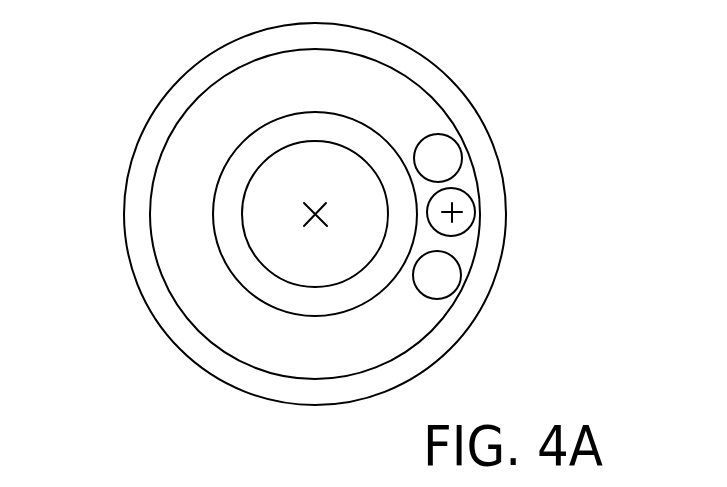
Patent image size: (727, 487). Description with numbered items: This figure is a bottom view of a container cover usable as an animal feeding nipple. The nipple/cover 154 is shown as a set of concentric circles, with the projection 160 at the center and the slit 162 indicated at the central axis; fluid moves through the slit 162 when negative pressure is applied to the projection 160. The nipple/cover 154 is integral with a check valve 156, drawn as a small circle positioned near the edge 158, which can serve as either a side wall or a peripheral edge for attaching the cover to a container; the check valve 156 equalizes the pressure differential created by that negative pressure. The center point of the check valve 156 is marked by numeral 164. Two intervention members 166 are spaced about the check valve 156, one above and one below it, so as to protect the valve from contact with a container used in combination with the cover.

The nipple/cover 154 is at (560, 161).
The check valve 156 is at (468, 207).
The edge 158 is at (458, 97).
The projection 160 is at (277, 200).
The slit 162 is at (305, 225).
The conductor center 164 is at (450, 217).
The intervention members 166 is at (447, 155).